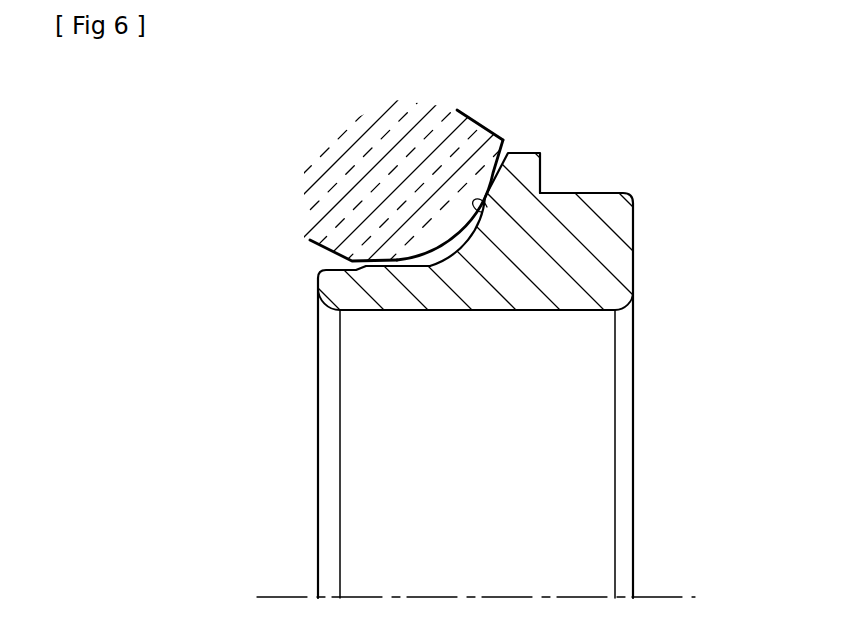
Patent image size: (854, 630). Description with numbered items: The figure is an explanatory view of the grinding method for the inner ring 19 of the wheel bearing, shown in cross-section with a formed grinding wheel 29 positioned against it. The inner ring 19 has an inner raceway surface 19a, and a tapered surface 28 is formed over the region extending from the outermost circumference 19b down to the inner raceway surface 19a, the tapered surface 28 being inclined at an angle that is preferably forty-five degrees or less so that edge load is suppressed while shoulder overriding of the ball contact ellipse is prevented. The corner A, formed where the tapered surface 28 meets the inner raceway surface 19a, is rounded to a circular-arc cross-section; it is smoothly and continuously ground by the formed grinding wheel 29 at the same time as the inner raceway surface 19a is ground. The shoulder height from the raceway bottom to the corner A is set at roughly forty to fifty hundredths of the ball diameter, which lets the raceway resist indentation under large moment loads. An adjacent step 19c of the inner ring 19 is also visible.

The inner ring 19 is at (305, 245).
The inner raceway surface 19a is at (457, 242).
The outermost circumference 19b is at (524, 150).
The outer step of large rib 19c is at (590, 193).
The tapered surface 28 is at (493, 173).
The formed grinding wheel 29 is at (344, 150).
The corner A is at (487, 207).